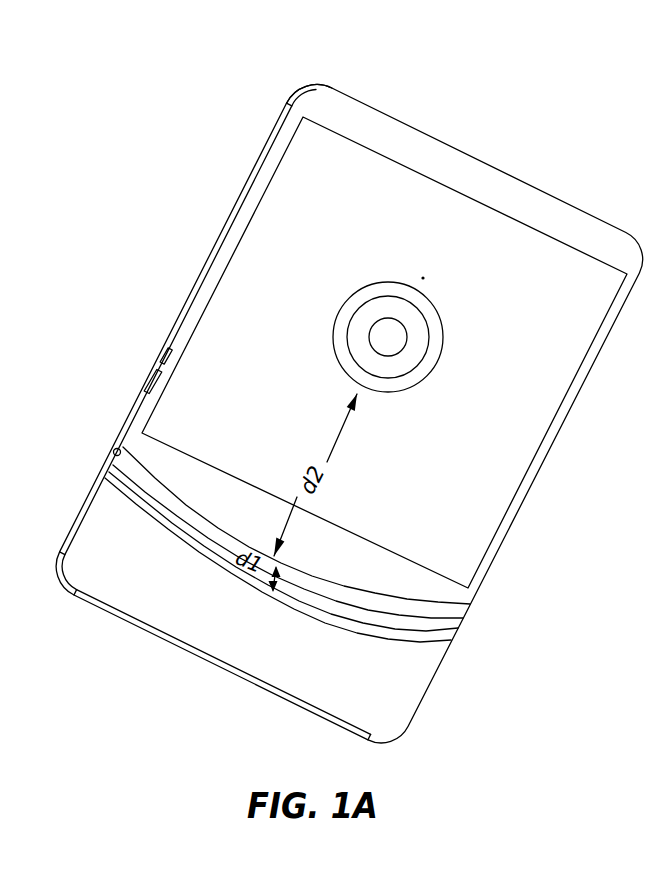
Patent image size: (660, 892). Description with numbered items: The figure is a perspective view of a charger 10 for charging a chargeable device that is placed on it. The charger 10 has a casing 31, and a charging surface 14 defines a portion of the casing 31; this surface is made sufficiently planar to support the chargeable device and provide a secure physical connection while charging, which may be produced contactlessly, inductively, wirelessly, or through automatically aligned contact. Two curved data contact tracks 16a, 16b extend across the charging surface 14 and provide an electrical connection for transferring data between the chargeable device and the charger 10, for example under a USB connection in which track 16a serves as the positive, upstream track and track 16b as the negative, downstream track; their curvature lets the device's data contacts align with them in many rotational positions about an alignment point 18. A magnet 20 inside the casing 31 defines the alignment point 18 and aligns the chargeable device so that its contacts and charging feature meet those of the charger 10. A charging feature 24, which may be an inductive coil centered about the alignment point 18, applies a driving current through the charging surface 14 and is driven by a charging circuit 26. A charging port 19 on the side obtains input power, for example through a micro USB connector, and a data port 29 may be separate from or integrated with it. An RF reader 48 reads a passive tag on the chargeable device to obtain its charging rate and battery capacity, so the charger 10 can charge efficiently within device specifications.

The charger 10 is at (176, 236).
The charging surface 14 is at (331, 199).
The data contact track 16a is at (251, 595).
The data contact track 16b is at (300, 569).
The alignment point 18 is at (396, 332).
The charging port 19 is at (113, 452).
The magnet 20 is at (417, 373).
The charging feature 24 is at (366, 390).
The charging circuit 26 is at (364, 351).
The data port 29 is at (147, 374).
The casing 31 is at (327, 108).
The radio frequency (RF) reader 48 is at (425, 279).